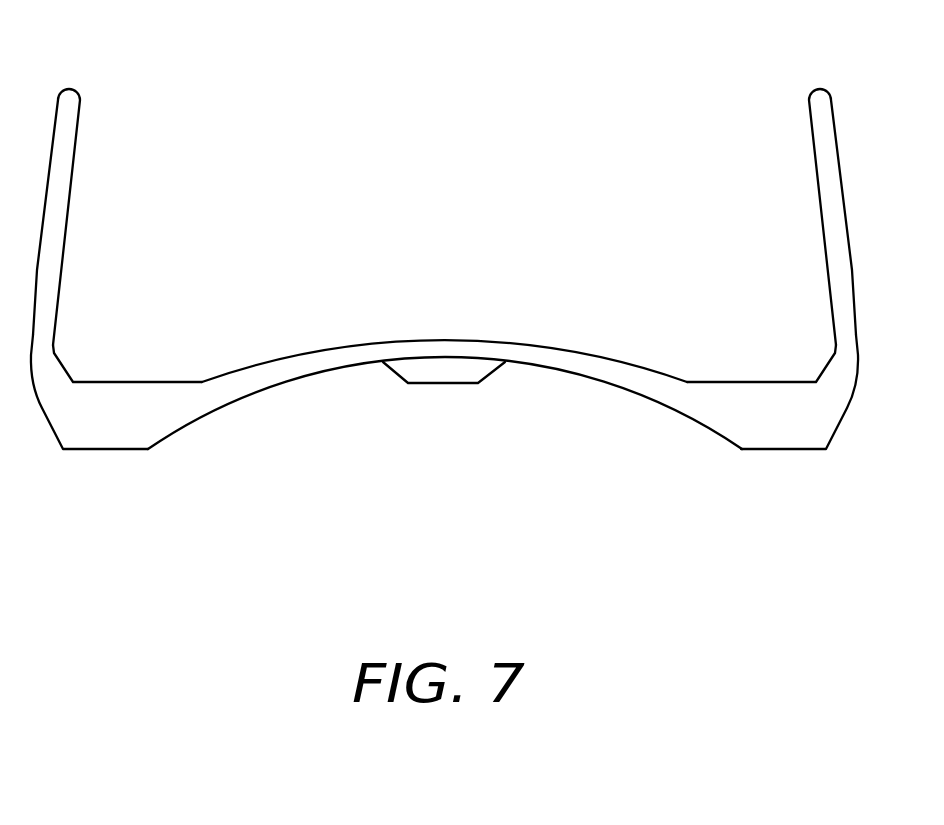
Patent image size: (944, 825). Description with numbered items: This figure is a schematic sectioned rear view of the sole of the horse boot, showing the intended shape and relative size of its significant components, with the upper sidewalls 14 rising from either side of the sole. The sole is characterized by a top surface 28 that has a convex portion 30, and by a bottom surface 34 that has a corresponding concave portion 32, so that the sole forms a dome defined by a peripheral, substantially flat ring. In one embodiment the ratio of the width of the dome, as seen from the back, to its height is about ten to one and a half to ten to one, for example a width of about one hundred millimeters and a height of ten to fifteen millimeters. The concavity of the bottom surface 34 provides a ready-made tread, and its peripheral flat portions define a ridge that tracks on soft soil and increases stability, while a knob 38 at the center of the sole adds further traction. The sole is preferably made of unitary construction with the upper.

The sidewalls 14 is at (80, 118).
The top surface 28 is at (125, 382).
The convex portion 30 is at (528, 346).
The concave portion 32 is at (203, 408).
The bottom surface 34 is at (93, 438).
The knob 38 is at (438, 373).